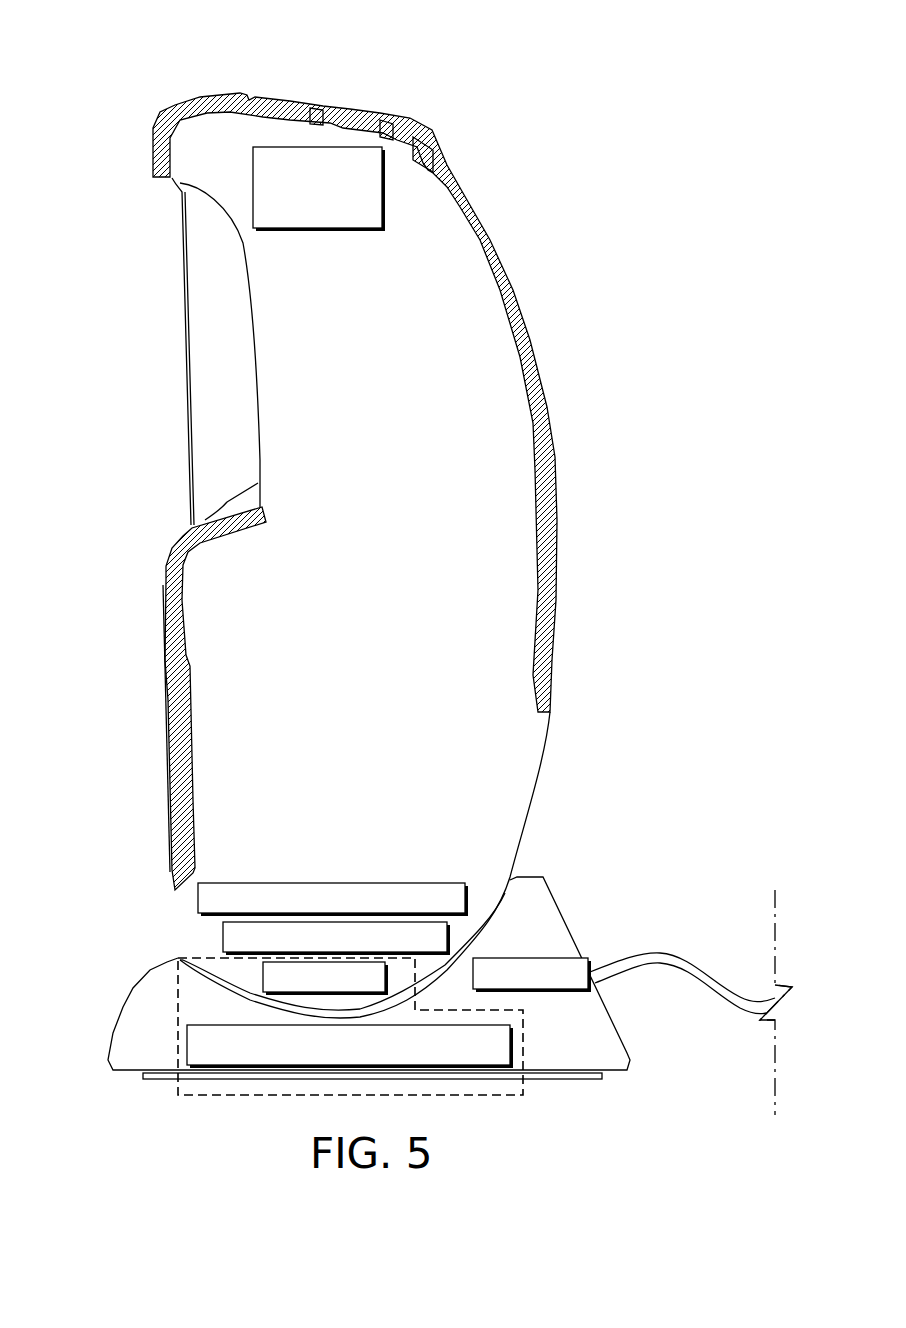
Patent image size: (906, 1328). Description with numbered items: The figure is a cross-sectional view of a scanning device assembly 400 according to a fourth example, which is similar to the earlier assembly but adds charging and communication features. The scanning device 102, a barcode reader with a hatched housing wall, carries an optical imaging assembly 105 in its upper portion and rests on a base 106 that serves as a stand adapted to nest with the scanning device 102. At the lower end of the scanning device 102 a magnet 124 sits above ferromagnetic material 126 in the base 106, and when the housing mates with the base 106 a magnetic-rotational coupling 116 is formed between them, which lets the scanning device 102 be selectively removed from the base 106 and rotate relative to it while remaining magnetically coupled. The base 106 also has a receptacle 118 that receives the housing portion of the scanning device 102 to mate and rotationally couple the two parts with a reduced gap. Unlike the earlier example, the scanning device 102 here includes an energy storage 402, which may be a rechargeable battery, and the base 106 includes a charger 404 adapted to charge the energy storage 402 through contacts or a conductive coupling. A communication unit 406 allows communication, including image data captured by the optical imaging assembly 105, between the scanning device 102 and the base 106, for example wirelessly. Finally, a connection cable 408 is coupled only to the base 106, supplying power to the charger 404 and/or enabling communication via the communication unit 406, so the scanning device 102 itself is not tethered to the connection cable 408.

The scanning device assembly 400 is at (121, 51).
The scanning device 102 is at (555, 437).
The optical imaging assembly 105 is at (357, 230).
The base 106 is at (122, 1060).
The magnetic-rotational coupling 116 is at (178, 1052).
The receptacle 118 is at (197, 981).
The magnet 124 is at (180, 960).
The ferromagnetic material 126 is at (512, 1040).
The energy storage 402 is at (223, 940).
The charger 404 is at (540, 958).
The communication unit 406 is at (328, 883).
The connection cable 408 is at (672, 955).